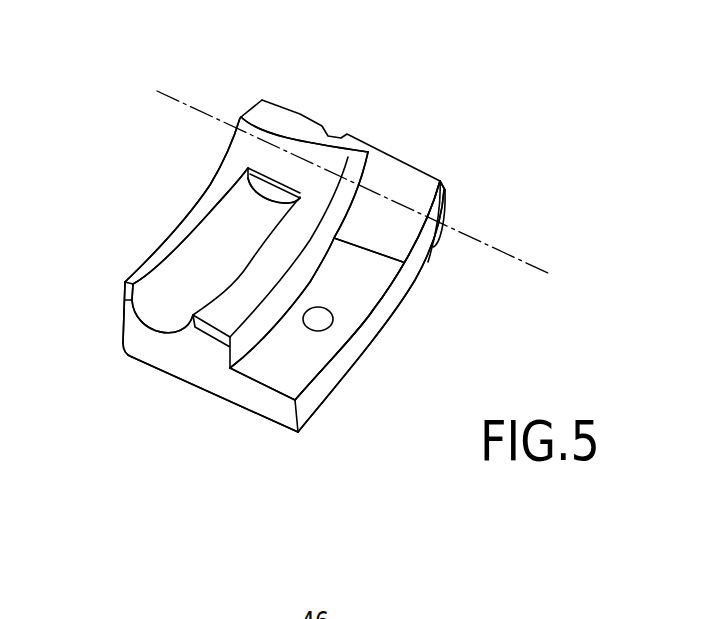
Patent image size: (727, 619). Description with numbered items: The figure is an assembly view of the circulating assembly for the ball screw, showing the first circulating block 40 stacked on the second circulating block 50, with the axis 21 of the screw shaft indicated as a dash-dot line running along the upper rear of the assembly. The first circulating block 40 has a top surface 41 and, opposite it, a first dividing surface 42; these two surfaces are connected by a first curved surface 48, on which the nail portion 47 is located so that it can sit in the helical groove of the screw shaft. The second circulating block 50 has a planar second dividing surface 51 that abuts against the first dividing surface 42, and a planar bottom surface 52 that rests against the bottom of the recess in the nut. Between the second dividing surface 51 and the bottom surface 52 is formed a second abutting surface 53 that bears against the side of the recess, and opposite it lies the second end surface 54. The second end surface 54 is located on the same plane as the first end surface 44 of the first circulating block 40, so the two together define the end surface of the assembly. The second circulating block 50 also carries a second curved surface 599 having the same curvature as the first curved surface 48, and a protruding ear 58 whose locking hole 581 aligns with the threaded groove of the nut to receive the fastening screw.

The axis 21 is at (187, 105).
The first circulating block 40 is at (302, 112).
The top surface 41 is at (343, 153).
The first end surface 44 is at (443, 192).
The first dividing surface 42 is at (192, 226).
The second dividing surface 51 is at (177, 250).
The nail portion 47 is at (237, 207).
The first curved surface 48 is at (237, 163).
The second circulating block 50 is at (132, 358).
The second abutting surface 53 is at (122, 320).
The second curved surface 599 is at (198, 340).
The protruding ear 58 is at (260, 367).
The locking hole 581 is at (320, 318).
The bottom surface 52 is at (357, 370).
The second end surface 54 is at (322, 400).